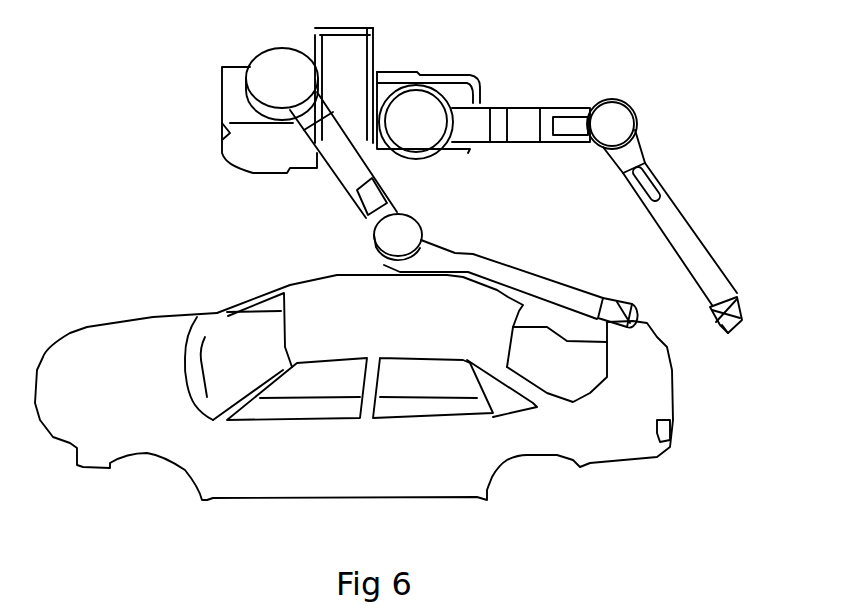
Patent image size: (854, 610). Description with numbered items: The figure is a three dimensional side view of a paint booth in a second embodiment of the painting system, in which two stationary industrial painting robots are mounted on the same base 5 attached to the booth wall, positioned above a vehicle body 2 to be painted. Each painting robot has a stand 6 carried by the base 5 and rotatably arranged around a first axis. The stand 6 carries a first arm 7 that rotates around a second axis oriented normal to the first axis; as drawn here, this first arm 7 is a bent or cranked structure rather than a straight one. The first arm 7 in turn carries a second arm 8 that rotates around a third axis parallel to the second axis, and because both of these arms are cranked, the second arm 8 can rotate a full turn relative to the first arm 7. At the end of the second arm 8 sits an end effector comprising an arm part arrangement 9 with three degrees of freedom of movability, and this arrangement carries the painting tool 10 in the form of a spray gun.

The vehicle body 2 is at (100, 333).
The base 5 is at (302, 35).
The stand 6 is at (208, 98).
The first arm 7 is at (325, 202).
The second arm 8 is at (722, 255).
The arm part arrangement 9 is at (618, 292).
The painting tool 10 is at (738, 337).